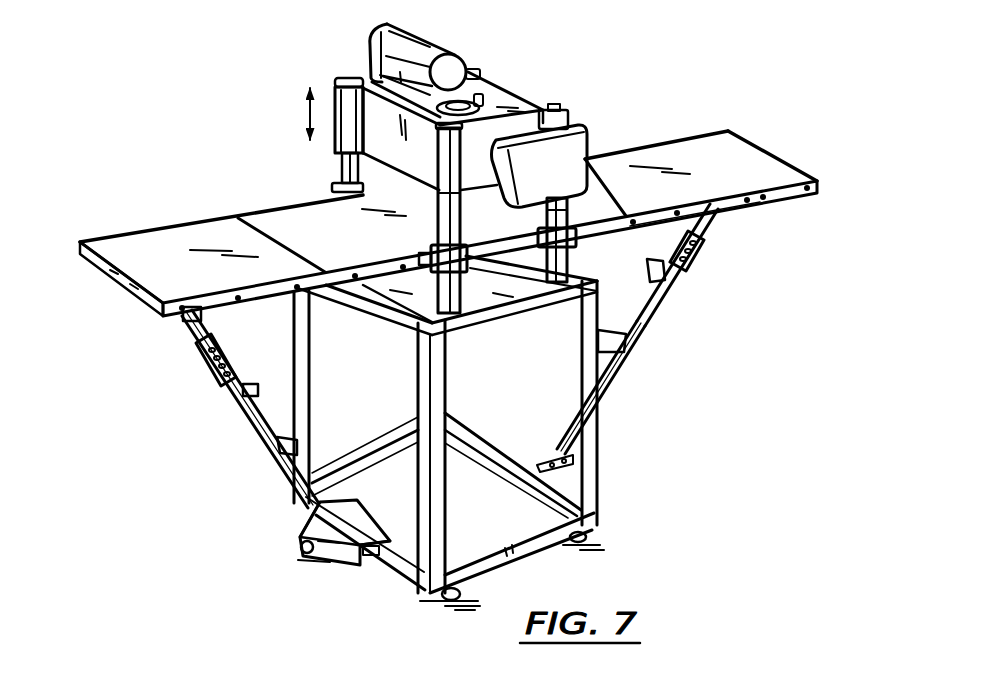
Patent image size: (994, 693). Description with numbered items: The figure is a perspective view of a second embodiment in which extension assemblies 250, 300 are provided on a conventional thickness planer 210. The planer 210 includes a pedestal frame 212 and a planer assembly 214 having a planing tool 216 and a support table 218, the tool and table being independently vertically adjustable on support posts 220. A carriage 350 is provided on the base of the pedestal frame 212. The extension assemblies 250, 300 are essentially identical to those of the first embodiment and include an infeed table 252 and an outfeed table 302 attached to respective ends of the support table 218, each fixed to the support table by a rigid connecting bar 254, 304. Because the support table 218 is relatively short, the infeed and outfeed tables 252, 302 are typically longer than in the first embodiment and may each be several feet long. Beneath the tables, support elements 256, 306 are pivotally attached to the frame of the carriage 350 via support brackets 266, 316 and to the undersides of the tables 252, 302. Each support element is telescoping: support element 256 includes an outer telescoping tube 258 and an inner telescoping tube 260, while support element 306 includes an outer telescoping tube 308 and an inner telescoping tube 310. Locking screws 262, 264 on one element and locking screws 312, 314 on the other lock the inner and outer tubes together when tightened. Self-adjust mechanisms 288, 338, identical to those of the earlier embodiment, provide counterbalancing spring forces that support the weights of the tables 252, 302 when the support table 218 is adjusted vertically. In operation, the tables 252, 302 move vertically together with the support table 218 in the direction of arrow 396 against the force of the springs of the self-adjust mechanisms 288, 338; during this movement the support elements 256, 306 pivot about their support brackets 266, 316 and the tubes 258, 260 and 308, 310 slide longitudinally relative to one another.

The thickness planer 210 is at (557, 61).
The pedestal frame 212 is at (599, 490).
The planer assembly 214 is at (545, 99).
The planing tool 216 is at (370, 80).
The support table 218 is at (318, 232).
The support posts 220 is at (333, 152).
The extension assembly 250 is at (694, 352).
The infeed table 252 is at (773, 150).
The rigid connecting bar 254 is at (710, 129).
The support element 256 is at (686, 297).
The outer telescoping tube 258 is at (618, 379).
The inner telescoping tube 260 is at (712, 227).
The locking screw 262 is at (655, 270).
The locking screw 264 is at (634, 323).
The support bracket 266 is at (582, 463).
The self-adjust mechanism 288 is at (702, 257).
The extension assembly 300 is at (234, 423).
The outfeed table 302 is at (135, 285).
The rigid connecting bar 304 is at (78, 240).
The support element 306 is at (258, 466).
The outer telescoping tube 308 is at (303, 508).
The inner telescoping tube 310 is at (206, 326).
The locking screw 312 is at (258, 392).
The locking screw 314 is at (288, 441).
The support bracket 316 is at (317, 560).
The self-adjust mechanism 338 is at (198, 356).
The carriage 350 is at (604, 520).
The arrow 396 is at (307, 110).